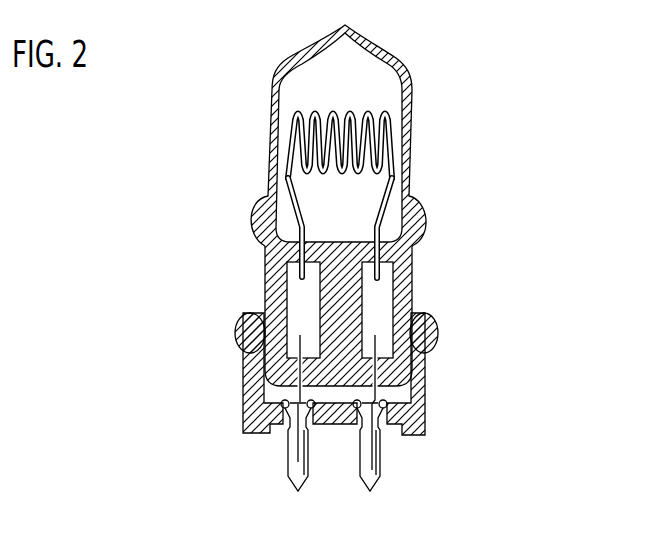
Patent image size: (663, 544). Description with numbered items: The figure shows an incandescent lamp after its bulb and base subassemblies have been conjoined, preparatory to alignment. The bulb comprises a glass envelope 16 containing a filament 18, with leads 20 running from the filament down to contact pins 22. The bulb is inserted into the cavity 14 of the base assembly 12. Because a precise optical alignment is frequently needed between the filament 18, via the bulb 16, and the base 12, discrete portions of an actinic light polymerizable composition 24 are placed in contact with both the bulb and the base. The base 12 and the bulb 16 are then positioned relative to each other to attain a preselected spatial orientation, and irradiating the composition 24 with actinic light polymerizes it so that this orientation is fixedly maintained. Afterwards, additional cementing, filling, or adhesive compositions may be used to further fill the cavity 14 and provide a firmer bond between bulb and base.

The base assembly 12 is at (417, 425).
The cavity 14 is at (407, 391).
The glass envelope 16 is at (412, 77).
The filament 18 is at (385, 133).
The leads 20 is at (293, 388).
The contact pins 22 is at (363, 478).
The actinic light polymerizable composition 24 is at (283, 326).